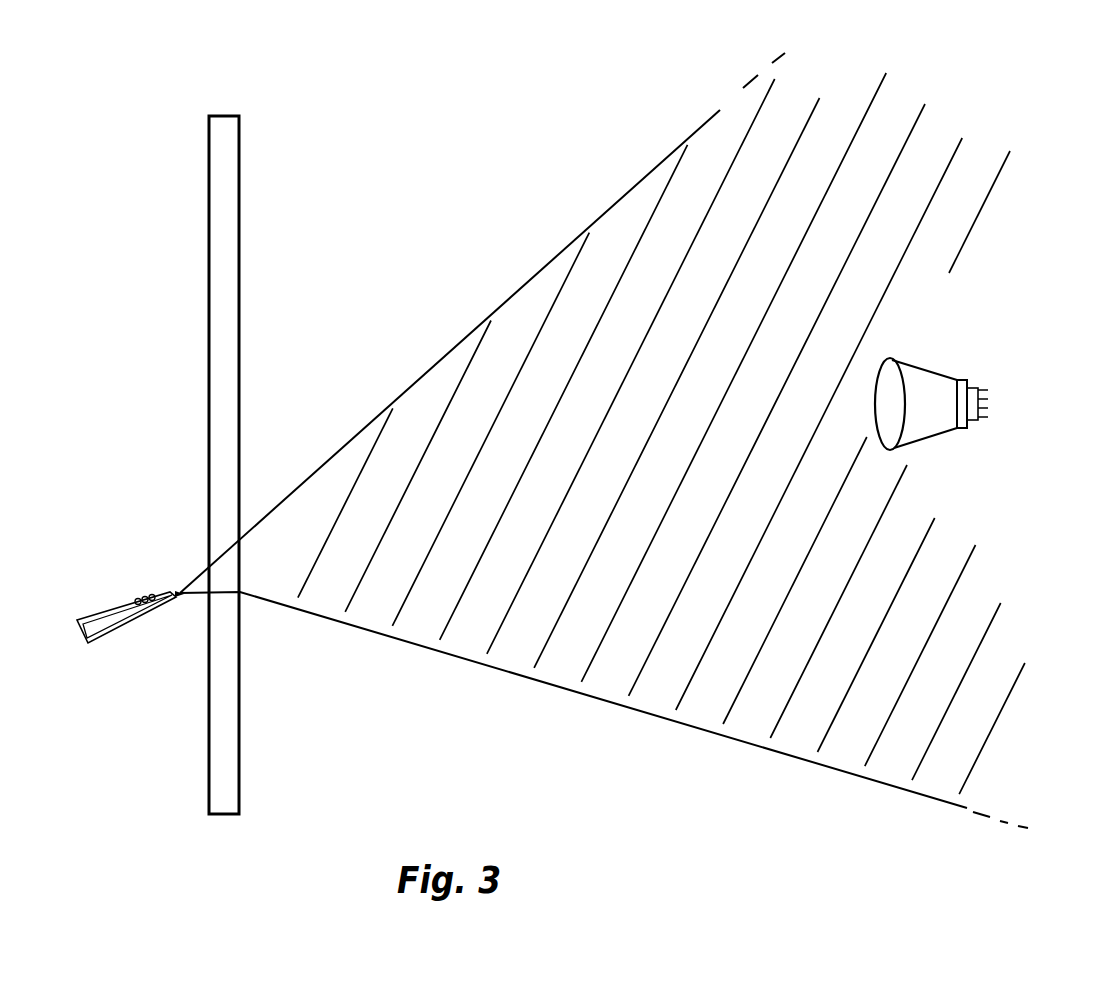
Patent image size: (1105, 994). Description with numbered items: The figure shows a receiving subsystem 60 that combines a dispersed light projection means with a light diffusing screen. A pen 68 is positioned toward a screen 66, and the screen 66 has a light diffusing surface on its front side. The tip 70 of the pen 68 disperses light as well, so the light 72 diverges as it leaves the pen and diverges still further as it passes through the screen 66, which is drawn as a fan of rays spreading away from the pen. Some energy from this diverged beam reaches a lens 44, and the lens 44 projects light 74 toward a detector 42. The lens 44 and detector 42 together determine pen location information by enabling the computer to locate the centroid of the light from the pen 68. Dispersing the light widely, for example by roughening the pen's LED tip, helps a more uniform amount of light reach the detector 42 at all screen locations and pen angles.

The receiving subsystem 60 is at (443, 149).
The screen 66 is at (207, 318).
The pen 68 is at (118, 602).
The tip 70 is at (178, 598).
The light 72 is at (443, 652).
The detector 42 is at (962, 378).
The lens 44 is at (890, 358).
The light 74 is at (937, 435).